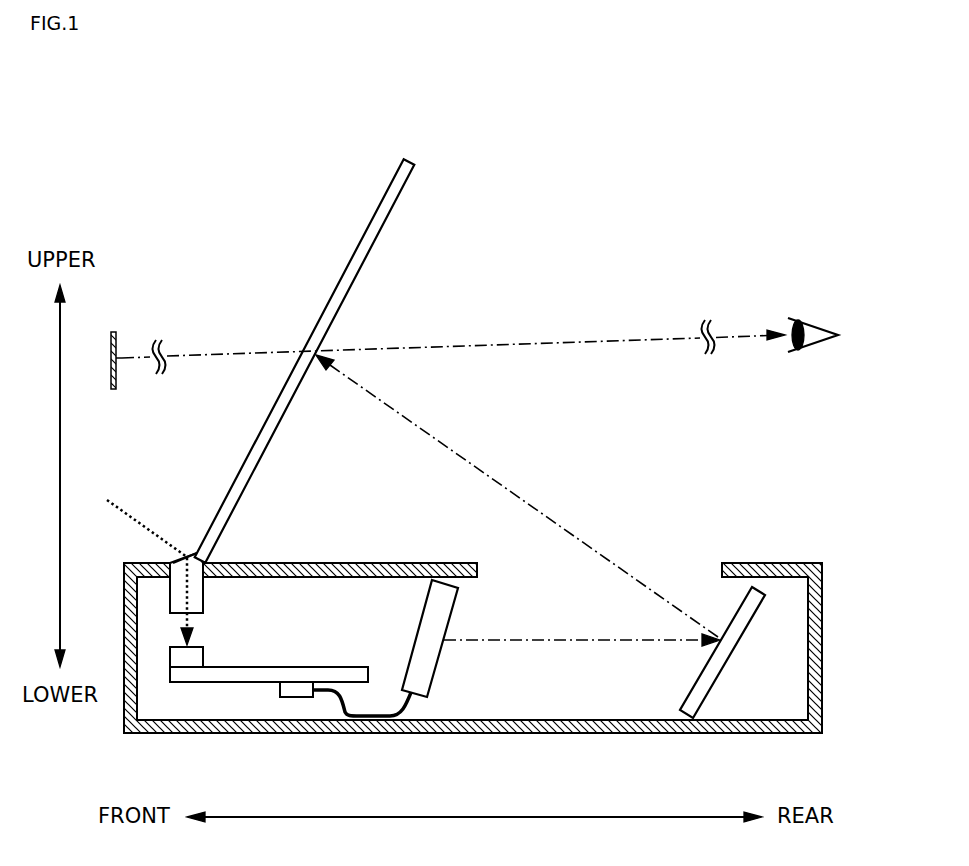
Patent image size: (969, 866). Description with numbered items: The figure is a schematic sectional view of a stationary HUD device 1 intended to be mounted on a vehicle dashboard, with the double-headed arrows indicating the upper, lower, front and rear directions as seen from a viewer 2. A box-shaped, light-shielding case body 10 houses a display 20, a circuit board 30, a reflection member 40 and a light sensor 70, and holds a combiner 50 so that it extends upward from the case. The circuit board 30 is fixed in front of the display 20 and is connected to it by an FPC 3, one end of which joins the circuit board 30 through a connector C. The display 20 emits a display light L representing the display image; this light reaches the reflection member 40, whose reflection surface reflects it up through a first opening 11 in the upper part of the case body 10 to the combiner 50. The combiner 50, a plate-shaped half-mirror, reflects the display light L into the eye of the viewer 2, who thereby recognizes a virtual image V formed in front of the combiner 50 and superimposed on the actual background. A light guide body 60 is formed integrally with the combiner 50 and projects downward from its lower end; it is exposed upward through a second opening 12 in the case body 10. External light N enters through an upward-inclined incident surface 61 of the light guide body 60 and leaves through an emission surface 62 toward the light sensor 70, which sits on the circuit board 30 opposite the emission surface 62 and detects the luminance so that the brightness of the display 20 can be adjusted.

The HUD device 1 is at (527, 210).
The viewer 2 is at (822, 317).
The FPC 3 is at (342, 717).
The case body 10 is at (805, 563).
The first opening 11 is at (722, 565).
The second opening 12 is at (213, 560).
The display 20 is at (452, 610).
The circuit board 30 is at (320, 667).
The reflection member 40 is at (724, 668).
The combiner 50 is at (359, 247).
The light guide body 60 is at (200, 592).
The incident surface 61 is at (190, 553).
The emission surface 62 is at (180, 602).
The light sensor 70 is at (203, 655).
The connector C is at (280, 690).
The display light L is at (553, 640).
The external light N is at (139, 563).
The virtual image V is at (117, 337).